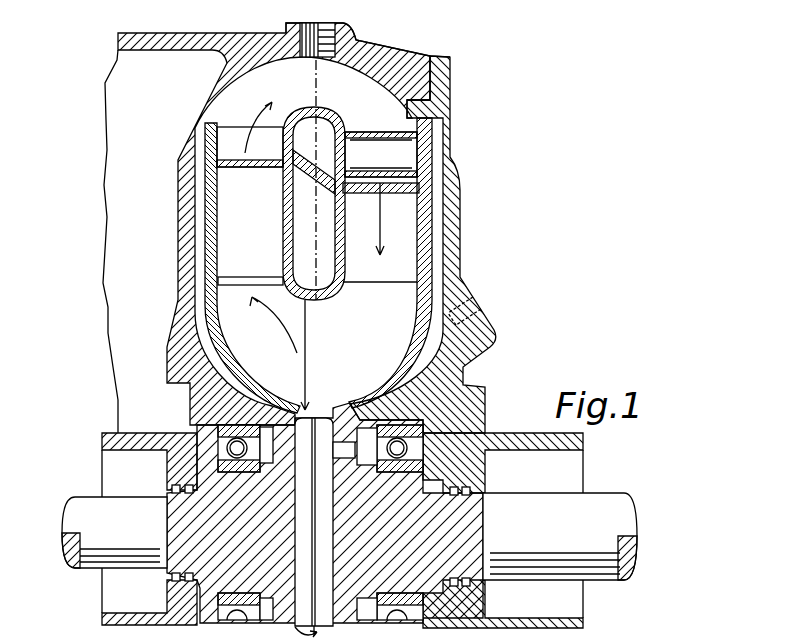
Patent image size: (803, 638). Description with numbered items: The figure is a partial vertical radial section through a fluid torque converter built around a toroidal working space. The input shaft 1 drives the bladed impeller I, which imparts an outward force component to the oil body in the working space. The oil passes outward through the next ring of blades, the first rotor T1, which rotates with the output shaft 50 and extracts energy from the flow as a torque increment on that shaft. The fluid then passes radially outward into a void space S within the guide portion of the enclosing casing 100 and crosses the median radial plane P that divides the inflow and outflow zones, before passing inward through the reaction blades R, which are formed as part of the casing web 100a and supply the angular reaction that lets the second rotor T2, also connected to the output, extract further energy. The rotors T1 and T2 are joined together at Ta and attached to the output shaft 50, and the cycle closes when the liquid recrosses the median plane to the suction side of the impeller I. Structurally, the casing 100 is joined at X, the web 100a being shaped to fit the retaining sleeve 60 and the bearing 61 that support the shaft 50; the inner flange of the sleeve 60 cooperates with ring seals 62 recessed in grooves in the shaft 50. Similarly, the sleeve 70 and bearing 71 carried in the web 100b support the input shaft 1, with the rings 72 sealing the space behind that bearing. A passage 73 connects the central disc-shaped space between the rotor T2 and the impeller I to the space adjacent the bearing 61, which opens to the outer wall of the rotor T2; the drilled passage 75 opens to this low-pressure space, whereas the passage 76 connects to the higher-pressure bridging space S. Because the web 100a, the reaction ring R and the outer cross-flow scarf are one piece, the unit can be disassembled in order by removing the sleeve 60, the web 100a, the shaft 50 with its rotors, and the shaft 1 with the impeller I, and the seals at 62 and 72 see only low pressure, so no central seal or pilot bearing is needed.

The input shaft 1 is at (95, 510).
The output shaft 50 is at (612, 513).
The retaining sleeve 60 is at (520, 442).
The bearing 61 is at (417, 448).
The ring seals 62 is at (473, 492).
The sleeve 70 is at (107, 435).
The bearing 71 is at (220, 450).
The rings 72 is at (172, 490).
The passage 73 is at (347, 445).
The drilled passage 75 is at (453, 333).
The passage 76 is at (312, 60).
The casing 100 is at (397, 68).
The casing web 100a is at (437, 107).
The casing web 100b is at (187, 363).
The impeller I is at (228, 302).
The median radial plane P is at (318, 78).
The reaction ring R is at (397, 158).
The void space S is at (400, 122).
The first rotor T1 is at (225, 157).
The second rotor T2 is at (402, 242).
The rotor connection Ta is at (317, 192).
The casing joint X is at (430, 58).